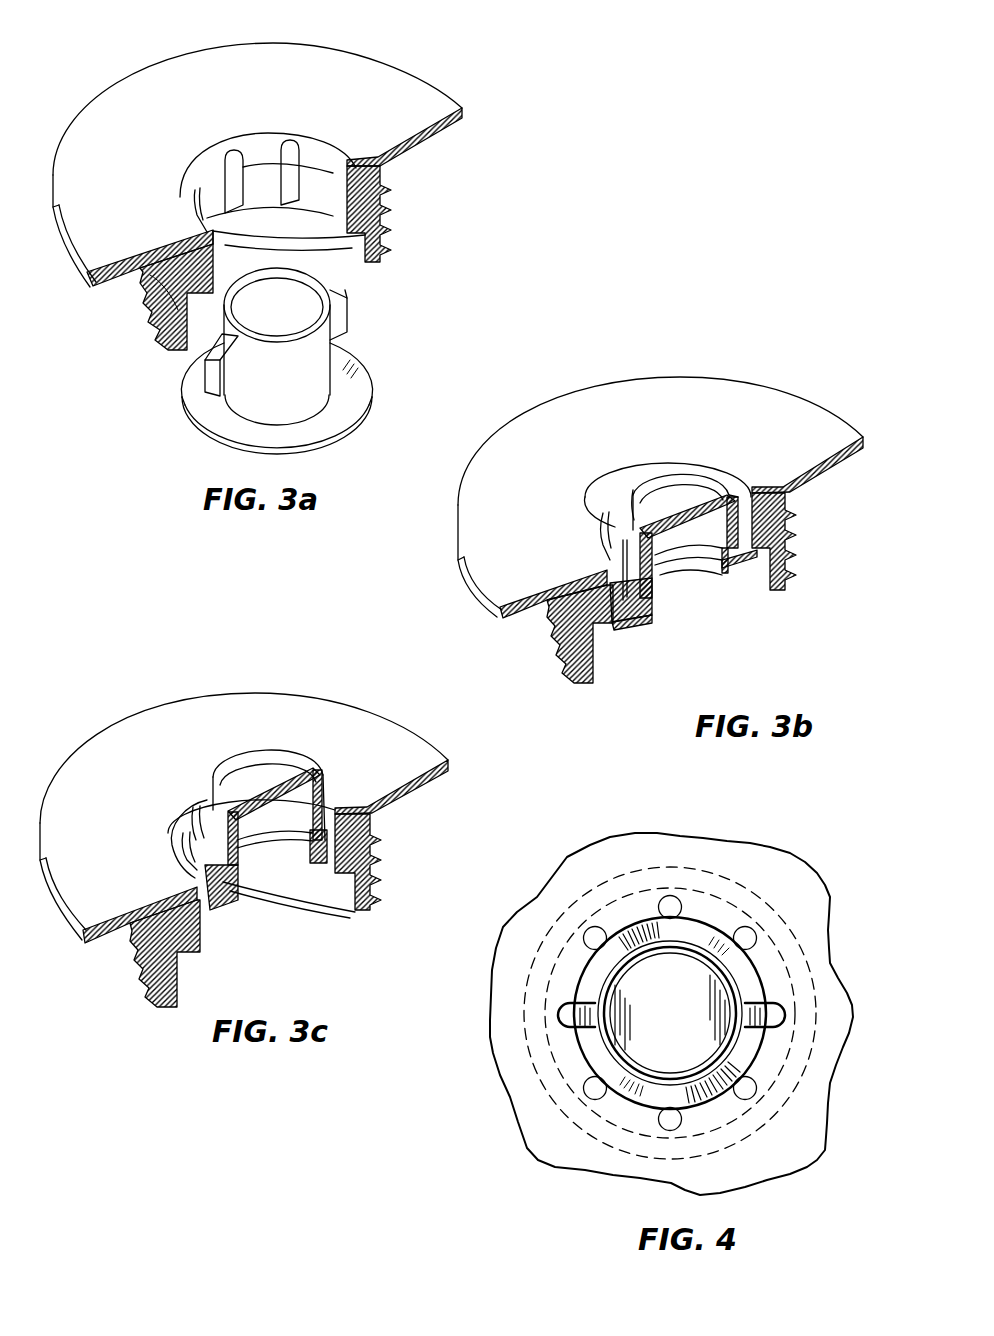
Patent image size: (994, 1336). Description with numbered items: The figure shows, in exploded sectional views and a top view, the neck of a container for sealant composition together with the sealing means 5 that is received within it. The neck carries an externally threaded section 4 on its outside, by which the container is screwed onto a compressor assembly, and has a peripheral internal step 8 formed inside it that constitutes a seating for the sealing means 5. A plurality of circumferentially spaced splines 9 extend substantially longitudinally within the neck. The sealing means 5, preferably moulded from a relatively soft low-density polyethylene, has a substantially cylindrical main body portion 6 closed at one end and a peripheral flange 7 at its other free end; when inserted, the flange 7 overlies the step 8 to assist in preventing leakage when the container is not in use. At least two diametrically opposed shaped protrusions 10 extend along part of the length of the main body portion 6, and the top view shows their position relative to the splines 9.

In FIG. 3A, the externally threaded section 4 is at (140, 302).
In FIG. 3B, the externally threaded section 4 is at (547, 620).
In FIG. 3C, the externally threaded section 4 is at (130, 945).
In FIG. 3A, the sealing means 5 is at (158, 421).
In FIG. 3B, the sealing means 5 is at (707, 440).
In FIG. 3C, the sealing means 5 is at (270, 727).
In FIG. 4, the sealing means 5 is at (671, 1014).
In FIG. 3A, the main body portion 6 is at (305, 380).
In FIG. 3A, the peripheral flange 7 is at (353, 377).
In FIG. 3B, the peripheral flange 7 is at (623, 623).
In FIG. 3C, the peripheral flange 7 is at (217, 903).
In FIG. 3A, the peripheral internal step 8 is at (388, 231).
In FIG. 3B, the peripheral internal step 8 is at (760, 567).
In FIG. 3C, the peripheral internal step 8 is at (367, 831).
In FIG. 3A, the splines 9 is at (240, 165).
In FIG. 3B, the splines 9 is at (607, 520).
In FIG. 3C, the splines 9 is at (193, 838).
In FIG. 4, the splines 9 is at (603, 935).
In FIG. 3A, the shaped protrusions 10 is at (255, 377).
In FIG. 3B, the shaped protrusions 10 is at (569, 518).
In FIG. 3C, the shaped protrusions 10 is at (303, 834).
In FIG. 4, the shaped protrusions 10 is at (602, 965).